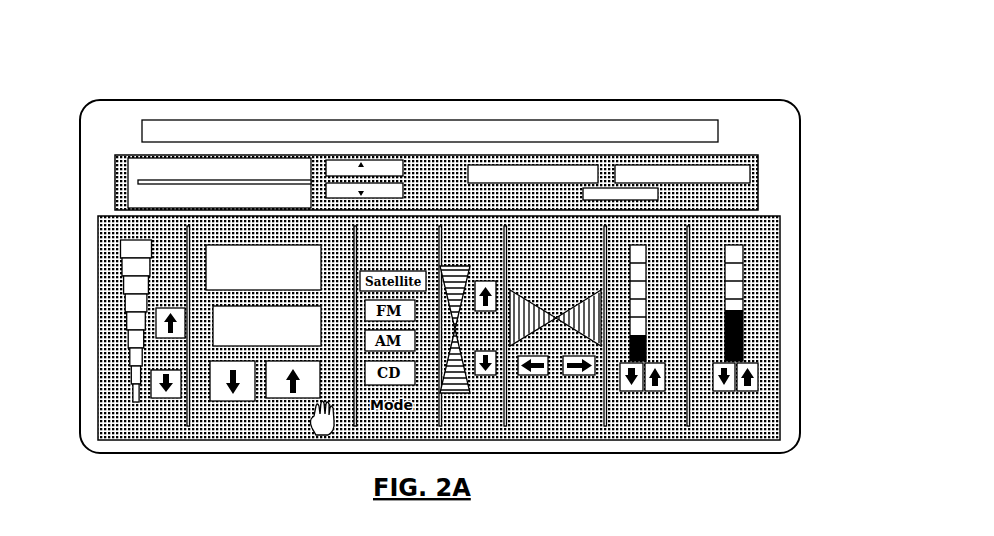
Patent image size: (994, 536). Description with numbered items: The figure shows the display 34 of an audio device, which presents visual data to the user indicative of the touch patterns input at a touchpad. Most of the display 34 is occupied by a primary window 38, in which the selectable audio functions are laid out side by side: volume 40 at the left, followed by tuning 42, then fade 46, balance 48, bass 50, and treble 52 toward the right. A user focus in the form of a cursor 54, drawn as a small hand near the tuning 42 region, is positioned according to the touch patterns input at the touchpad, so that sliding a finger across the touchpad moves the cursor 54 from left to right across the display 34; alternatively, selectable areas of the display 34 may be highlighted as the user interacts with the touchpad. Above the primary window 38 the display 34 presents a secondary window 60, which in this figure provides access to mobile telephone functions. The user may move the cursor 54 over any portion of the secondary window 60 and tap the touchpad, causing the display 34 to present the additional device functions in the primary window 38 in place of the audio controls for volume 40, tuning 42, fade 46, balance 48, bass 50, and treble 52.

The display 34 is at (105, 117).
The primary window 38 is at (96, 320).
The volume 40 is at (123, 423).
The tuning 42 is at (213, 420).
The fade 46 is at (468, 400).
The balance 48 is at (565, 400).
The bass 50 is at (655, 400).
The treble 52 is at (727, 400).
The cursor 54 is at (325, 427).
The secondary window 60 is at (628, 155).